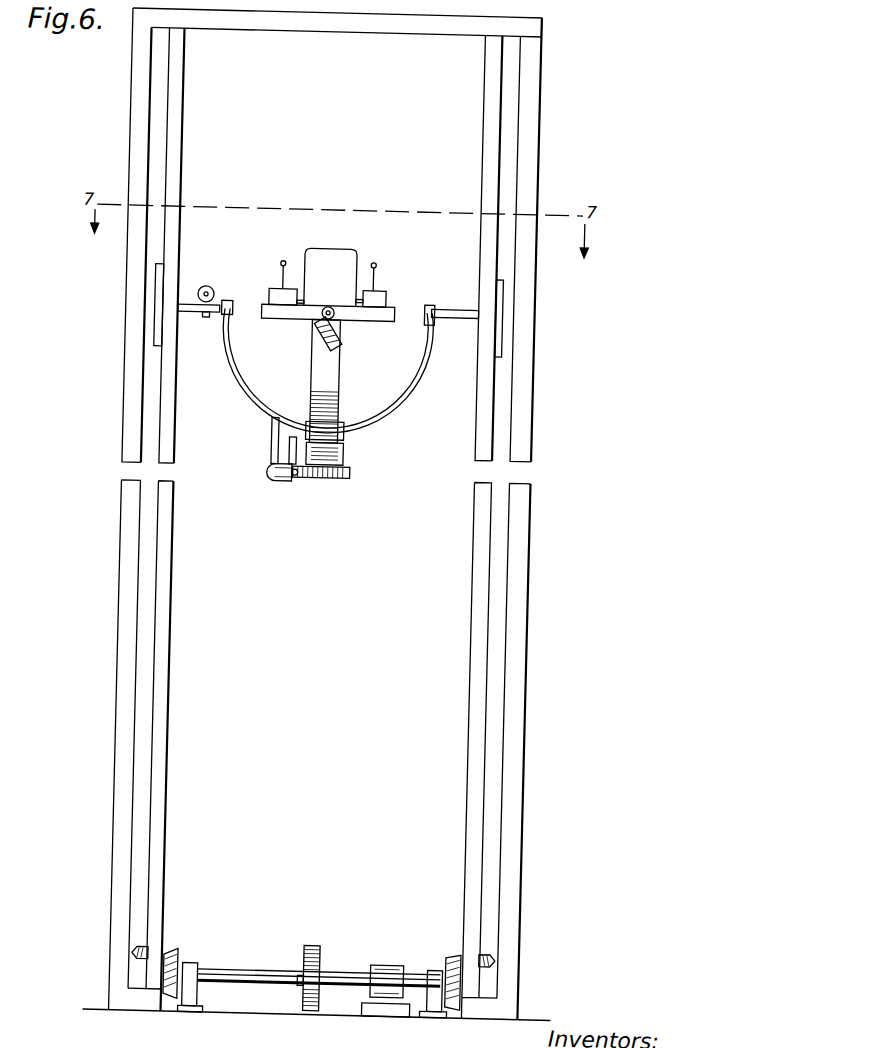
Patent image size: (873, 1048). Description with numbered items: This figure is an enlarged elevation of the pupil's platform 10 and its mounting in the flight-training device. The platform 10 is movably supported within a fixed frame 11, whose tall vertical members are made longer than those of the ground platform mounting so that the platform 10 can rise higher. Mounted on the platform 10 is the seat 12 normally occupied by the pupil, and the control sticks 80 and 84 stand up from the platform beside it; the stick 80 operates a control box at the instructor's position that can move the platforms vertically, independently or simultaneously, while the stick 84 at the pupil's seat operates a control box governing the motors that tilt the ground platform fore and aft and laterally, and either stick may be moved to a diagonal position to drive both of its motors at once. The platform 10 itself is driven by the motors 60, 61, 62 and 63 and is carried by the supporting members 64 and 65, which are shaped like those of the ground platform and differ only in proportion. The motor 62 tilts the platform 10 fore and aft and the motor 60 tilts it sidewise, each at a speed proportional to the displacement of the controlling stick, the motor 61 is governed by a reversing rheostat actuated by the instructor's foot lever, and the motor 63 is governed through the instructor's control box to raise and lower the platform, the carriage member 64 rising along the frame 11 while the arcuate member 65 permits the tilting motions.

The pupil's platform 10 is at (393, 304).
The fixed frame 11 is at (135, 543).
The seat 12 is at (340, 245).
The motor 60 is at (330, 328).
The motor 61 is at (279, 465).
The motor 62 is at (212, 285).
The motor 63 is at (401, 962).
The supporting member 64 is at (331, 373).
The supporting member 65 is at (434, 362).
The stick 80 is at (288, 268).
The stick 84 is at (383, 274).